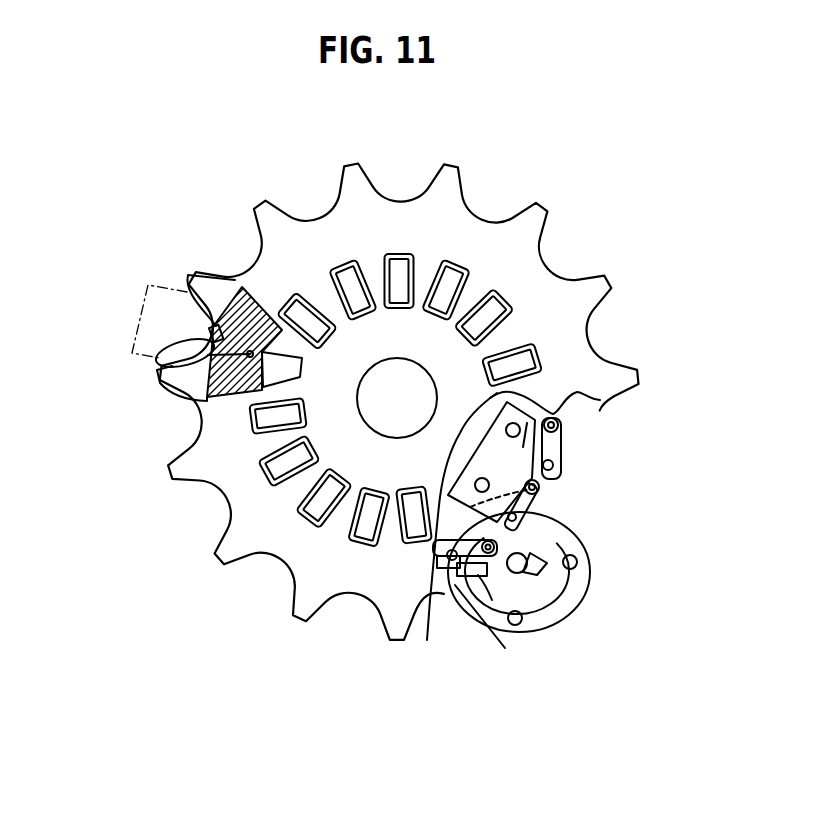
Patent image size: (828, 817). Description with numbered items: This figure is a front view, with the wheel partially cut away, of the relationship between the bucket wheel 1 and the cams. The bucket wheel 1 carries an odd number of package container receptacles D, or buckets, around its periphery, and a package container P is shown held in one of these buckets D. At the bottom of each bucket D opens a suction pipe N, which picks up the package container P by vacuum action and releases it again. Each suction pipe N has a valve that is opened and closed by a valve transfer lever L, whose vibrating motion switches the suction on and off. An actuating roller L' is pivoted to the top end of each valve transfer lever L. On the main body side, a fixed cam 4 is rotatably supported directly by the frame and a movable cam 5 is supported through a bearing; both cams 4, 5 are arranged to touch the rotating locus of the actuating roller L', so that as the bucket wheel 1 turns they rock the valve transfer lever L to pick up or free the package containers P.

The bucket wheel 1 is at (597, 293).
The package container receptacles D is at (307, 223).
The package container P is at (142, 300).
The suction pipe N is at (170, 363).
The fixed cam 4 is at (600, 400).
The valve transfer lever L is at (526, 554).
The actuating roller L' is at (540, 559).
The movable cam 5 is at (477, 600).